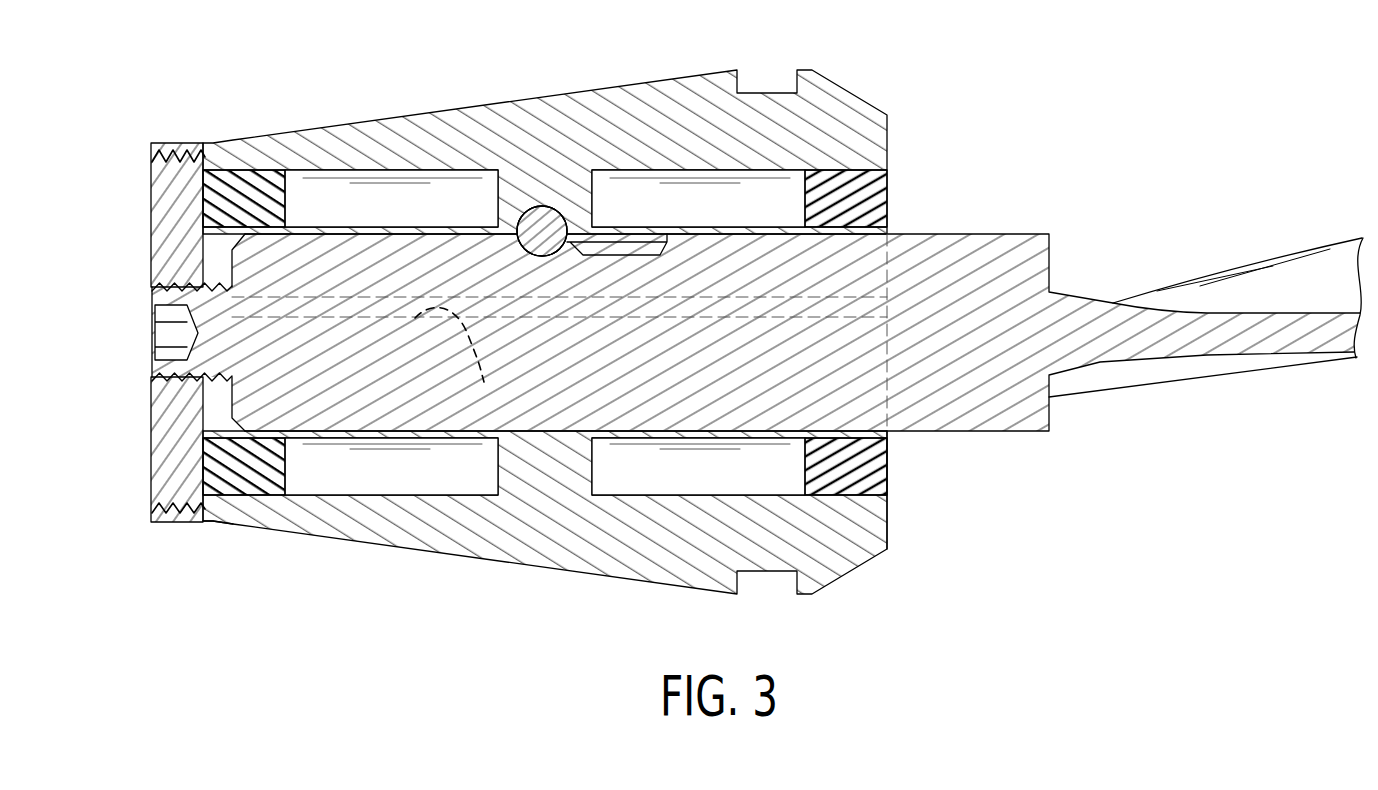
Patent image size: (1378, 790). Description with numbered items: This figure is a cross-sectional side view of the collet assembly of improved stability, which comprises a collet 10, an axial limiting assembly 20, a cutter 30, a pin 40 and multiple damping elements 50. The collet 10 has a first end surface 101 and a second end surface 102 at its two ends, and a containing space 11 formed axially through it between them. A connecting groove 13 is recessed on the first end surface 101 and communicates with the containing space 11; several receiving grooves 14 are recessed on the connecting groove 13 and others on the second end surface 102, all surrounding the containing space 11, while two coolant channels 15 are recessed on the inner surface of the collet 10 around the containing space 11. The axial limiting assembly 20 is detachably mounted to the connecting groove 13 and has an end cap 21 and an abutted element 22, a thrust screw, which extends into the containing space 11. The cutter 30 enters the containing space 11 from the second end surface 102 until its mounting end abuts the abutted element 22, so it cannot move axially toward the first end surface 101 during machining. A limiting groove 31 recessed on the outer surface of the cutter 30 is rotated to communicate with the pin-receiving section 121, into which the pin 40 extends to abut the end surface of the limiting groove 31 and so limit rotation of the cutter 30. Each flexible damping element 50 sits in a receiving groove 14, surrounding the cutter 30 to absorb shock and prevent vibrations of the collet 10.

The collet 10 is at (834, 64).
The containing space 11 is at (880, 257).
The connecting groove 13 is at (152, 171).
The receiving grooves 14 is at (350, 187).
The coolant channels 15 is at (458, 358).
The axial limiting assembly 20 is at (149, 213).
The end cap 21 is at (165, 258).
The abutted element 22 is at (162, 366).
The cutter 30 is at (1150, 399).
The limiting groove 31 is at (585, 253).
The pin 40 is at (517, 221).
The damping elements 50 is at (261, 165).
The first end surface 101 is at (151, 520).
The second end surface 102 is at (893, 521).
The pin-receiving section 121 is at (537, 224).